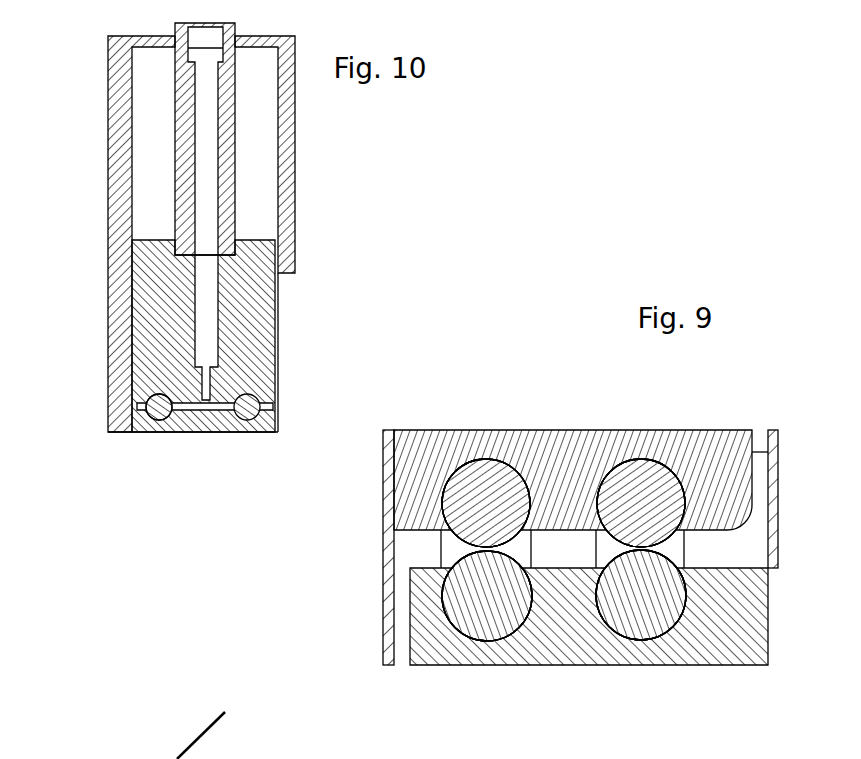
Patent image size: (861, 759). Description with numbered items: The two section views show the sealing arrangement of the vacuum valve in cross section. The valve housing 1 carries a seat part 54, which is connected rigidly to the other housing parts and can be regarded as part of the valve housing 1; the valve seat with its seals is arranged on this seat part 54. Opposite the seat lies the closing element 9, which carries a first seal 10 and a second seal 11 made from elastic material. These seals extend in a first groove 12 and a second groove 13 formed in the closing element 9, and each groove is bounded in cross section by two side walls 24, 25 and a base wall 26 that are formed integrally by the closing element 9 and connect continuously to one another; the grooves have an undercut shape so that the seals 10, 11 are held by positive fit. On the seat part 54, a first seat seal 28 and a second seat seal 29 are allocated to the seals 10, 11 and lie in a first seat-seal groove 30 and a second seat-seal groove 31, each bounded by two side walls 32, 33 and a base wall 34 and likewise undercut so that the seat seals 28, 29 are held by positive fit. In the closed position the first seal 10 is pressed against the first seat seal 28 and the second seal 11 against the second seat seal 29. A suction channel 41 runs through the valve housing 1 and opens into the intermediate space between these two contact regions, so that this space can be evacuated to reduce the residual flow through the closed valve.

In FIG. 10, the valve housing 1 is at (106, 239).
In FIG. 10, the closing element 9 is at (200, 437).
In FIG. 9, the closing element 9 is at (407, 592).
In FIG. 10, the first seal 10 is at (250, 434).
In FIG. 9, the first seal 10 is at (683, 607).
In FIG. 10, the second seal 11 is at (160, 434).
In FIG. 9, the second seal 11 is at (485, 632).
In FIG. 9, the first groove 12 is at (682, 600).
In FIG. 9, the second groove 13 is at (470, 622).
In FIG. 9, the side wall 24 is at (533, 590).
In FIG. 9, the side wall 25 is at (444, 597).
In FIG. 9, the base wall 26 is at (483, 641).
In FIG. 10, the first seat seal 28 is at (297, 375).
In FIG. 9, the first seat seal 28 is at (680, 495).
In FIG. 10, the second seat seal 29 is at (150, 396).
In FIG. 9, the second seat seal 29 is at (472, 488).
In FIG. 9, the first seat-seal groove 30 is at (684, 507).
In FIG. 9, the second seat-seal groove 31 is at (442, 498).
In FIG. 9, the side wall 32 is at (524, 507).
In FIG. 9, the side wall 33 is at (443, 492).
In FIG. 9, the base wall 34 is at (484, 460).
In FIG. 10, the suction channel 41 is at (203, 328).
In FIG. 10, the seat part 54 is at (281, 300).
In FIG. 9, the seat part 54 is at (709, 423).